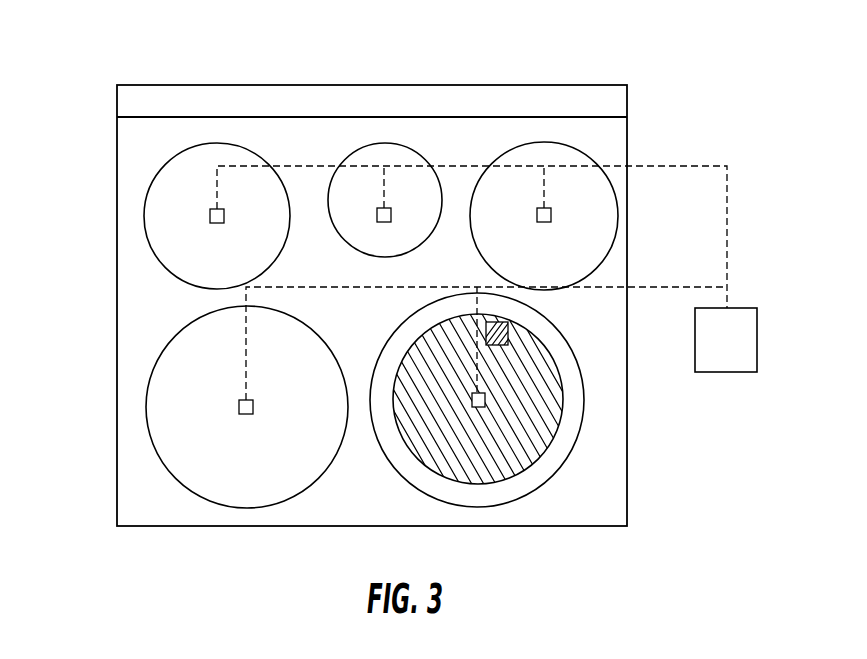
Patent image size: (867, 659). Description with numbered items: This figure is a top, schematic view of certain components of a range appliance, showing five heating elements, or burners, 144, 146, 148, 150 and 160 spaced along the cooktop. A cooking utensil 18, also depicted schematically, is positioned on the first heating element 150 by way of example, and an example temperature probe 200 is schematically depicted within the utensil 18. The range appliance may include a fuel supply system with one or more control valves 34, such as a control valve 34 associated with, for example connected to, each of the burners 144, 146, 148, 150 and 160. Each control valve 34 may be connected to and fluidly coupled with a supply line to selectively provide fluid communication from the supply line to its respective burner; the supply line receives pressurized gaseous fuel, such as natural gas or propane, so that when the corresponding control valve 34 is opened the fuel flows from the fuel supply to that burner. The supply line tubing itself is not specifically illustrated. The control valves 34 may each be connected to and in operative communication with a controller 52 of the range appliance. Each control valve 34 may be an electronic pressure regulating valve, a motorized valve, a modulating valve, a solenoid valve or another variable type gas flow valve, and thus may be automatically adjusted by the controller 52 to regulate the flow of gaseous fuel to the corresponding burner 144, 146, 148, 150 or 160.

The cooking utensil 18 is at (545, 455).
The control valve 34 is at (387, 208).
The controller 52 is at (757, 343).
The heating element 144 is at (146, 207).
The heating element 146 is at (312, 485).
The heating element 148 is at (585, 153).
The first heating element 150 is at (583, 415).
The heating element 160 is at (370, 144).
The temperature probe 200 is at (510, 343).